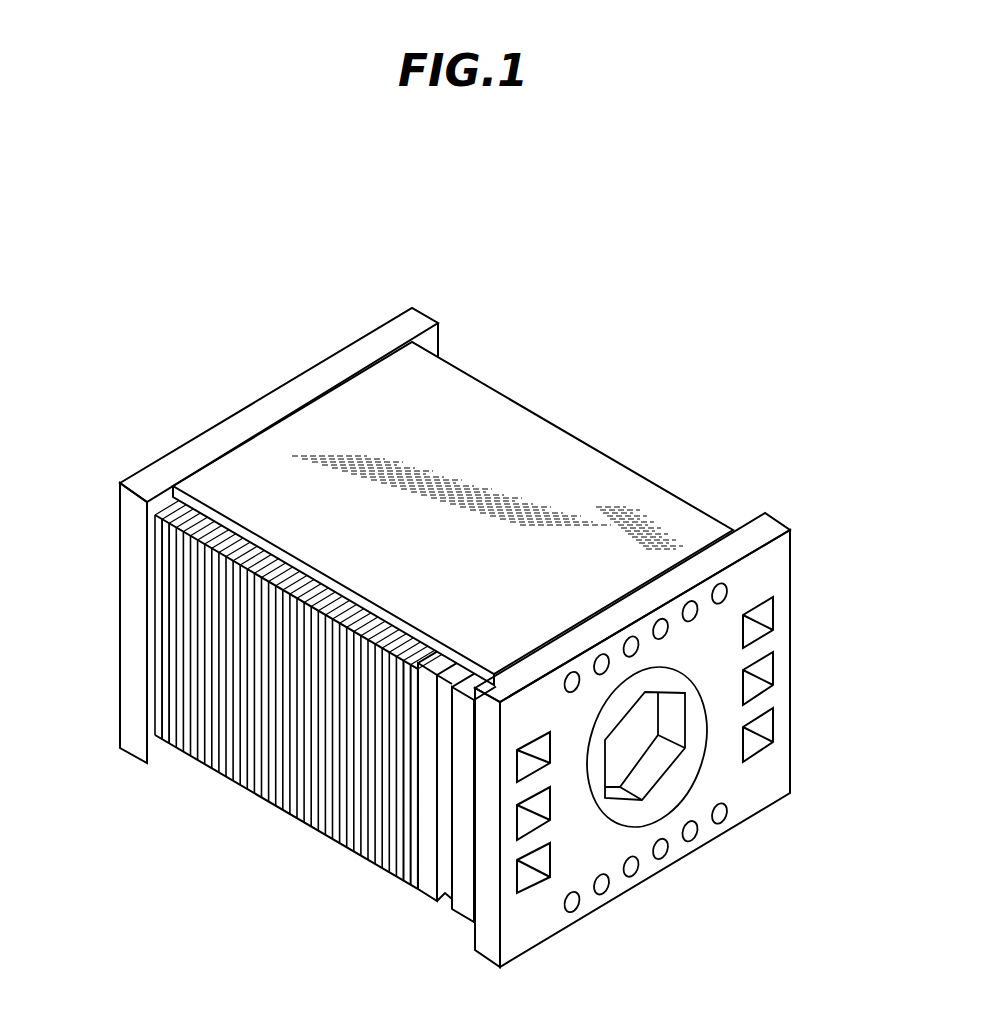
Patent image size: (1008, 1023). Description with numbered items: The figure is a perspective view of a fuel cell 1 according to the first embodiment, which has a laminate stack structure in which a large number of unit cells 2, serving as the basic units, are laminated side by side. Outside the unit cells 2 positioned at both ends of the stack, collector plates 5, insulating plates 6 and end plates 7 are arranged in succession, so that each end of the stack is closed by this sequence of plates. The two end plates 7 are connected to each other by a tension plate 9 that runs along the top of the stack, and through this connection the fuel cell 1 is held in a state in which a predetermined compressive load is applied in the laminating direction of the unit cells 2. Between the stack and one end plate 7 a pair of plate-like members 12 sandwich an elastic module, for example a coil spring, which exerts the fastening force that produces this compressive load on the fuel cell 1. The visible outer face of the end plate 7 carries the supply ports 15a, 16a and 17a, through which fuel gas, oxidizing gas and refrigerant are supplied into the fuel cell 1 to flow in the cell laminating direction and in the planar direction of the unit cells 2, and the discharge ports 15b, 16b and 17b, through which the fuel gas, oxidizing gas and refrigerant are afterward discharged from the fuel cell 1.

The fuel cell 1 is at (126, 449).
The unit cells 2 is at (349, 829).
The collector plates 5 is at (170, 747).
The insulating plates 6 is at (158, 744).
The end plates 7 is at (420, 323).
The tension plate 9 is at (535, 457).
The plate-like members 12 is at (428, 897).
The supply port 15a is at (542, 745).
The discharge port 15b is at (760, 728).
The supply port 16a is at (535, 883).
The discharge port 16b is at (762, 618).
The supply port 17a is at (540, 805).
The discharge port 17b is at (763, 670).